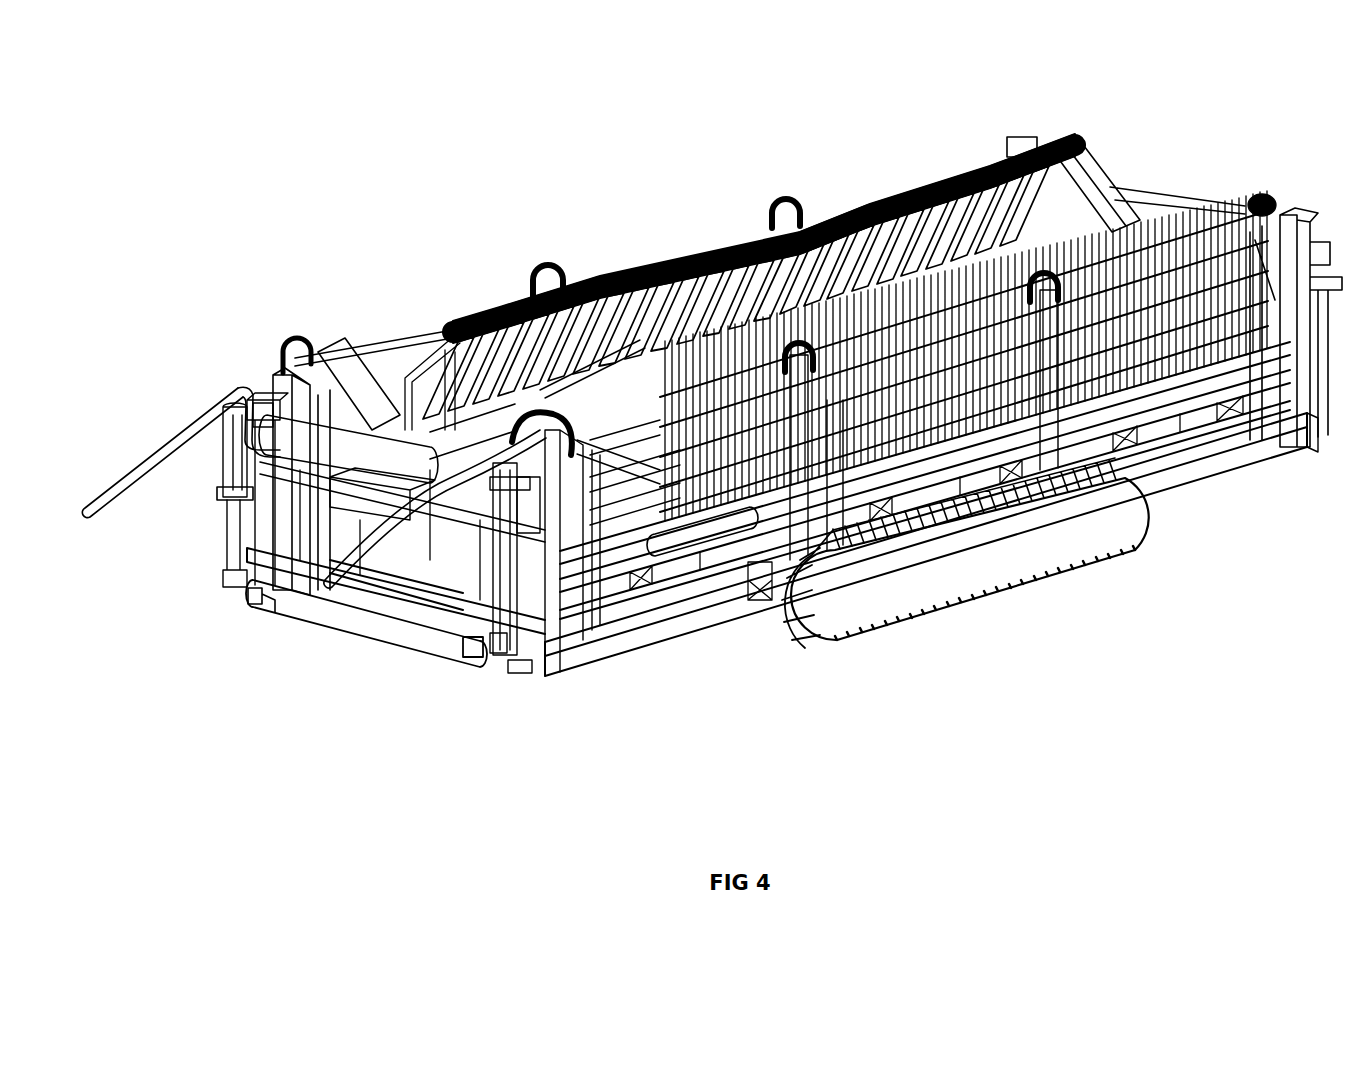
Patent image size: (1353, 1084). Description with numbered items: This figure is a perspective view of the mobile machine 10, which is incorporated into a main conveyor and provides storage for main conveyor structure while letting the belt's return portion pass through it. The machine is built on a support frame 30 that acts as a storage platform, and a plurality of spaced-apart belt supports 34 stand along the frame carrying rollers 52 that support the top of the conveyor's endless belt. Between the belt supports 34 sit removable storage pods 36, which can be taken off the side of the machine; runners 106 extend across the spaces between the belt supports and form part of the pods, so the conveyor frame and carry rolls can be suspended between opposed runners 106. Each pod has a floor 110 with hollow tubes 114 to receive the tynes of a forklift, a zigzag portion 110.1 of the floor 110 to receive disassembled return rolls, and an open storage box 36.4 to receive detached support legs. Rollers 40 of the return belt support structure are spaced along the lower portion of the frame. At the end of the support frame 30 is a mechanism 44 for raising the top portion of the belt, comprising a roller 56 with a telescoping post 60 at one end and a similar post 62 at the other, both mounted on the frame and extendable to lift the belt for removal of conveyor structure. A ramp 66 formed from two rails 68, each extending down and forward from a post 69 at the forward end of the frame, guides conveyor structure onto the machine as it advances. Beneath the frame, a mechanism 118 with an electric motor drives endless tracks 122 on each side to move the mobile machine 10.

The mobile machine 10 is at (1180, 507).
The support frame 30 is at (687, 625).
The belt supports 34 is at (280, 387).
The storage pods 36 is at (377, 347).
The open storage box 36.4 is at (253, 596).
The rollers 40 is at (377, 623).
The mechanism for raising the top portion of the belt 44 is at (250, 390).
The rollers 52 is at (370, 410).
The roller 56 is at (227, 488).
The post 60 is at (233, 527).
The post 62 is at (522, 673).
The ramp 66 is at (130, 467).
The rails 68 is at (322, 605).
The post 69 is at (227, 450).
The runners 106 is at (430, 330).
The floor 110 is at (603, 592).
The zigzag portion 110.1 is at (417, 600).
The hollow tubes 114 is at (760, 600).
The mechanism for moving the mobile machine 118 is at (897, 639).
The endless tracks 122 is at (830, 625).